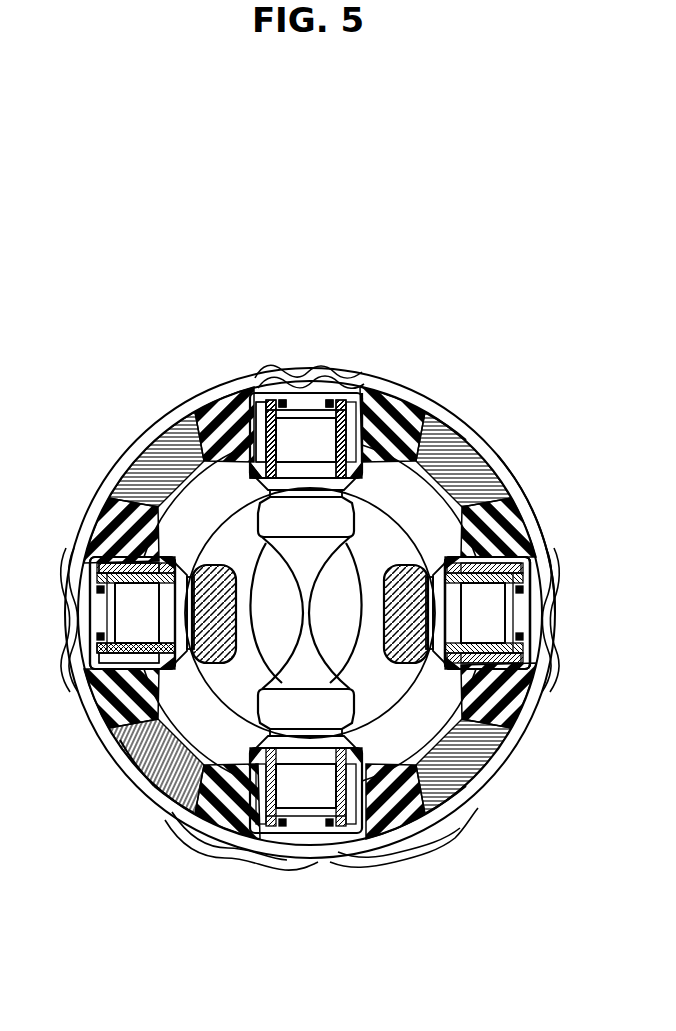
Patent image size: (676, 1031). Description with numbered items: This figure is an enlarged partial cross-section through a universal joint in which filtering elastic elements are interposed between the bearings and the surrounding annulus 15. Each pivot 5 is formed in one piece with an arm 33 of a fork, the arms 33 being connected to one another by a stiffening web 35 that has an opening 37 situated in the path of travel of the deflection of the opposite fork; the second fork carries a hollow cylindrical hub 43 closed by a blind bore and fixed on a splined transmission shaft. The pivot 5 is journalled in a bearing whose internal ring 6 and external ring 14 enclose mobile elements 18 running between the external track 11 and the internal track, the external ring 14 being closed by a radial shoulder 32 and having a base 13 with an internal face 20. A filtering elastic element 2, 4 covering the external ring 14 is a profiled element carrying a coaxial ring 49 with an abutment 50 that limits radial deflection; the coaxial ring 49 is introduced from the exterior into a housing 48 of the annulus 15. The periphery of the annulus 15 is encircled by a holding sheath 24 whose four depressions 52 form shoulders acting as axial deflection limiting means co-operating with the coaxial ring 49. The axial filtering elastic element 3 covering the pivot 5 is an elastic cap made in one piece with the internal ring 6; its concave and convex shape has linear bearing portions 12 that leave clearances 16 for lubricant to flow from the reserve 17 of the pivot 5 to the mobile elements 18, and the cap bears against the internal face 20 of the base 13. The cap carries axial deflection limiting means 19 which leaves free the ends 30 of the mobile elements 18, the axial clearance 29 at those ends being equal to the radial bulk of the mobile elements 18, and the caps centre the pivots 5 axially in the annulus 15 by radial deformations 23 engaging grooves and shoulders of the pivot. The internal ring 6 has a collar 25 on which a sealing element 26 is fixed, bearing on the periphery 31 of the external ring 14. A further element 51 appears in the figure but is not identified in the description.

The filtering elastic element 2 is at (522, 530).
The axial filtering elastic element 3 is at (80, 605).
The filtering elastic element 4 is at (548, 625).
The pivot 5 is at (70, 625).
The internal ring 6 is at (517, 528).
The external track 11 is at (548, 538).
The linear bearing portions 12 is at (266, 388).
The base 13 is at (342, 384).
The external ring 14 is at (368, 438).
The annulus 15 is at (120, 460).
The clearances 16 is at (305, 388).
The reserve 17 is at (540, 612).
The mobile elements 18 is at (252, 420).
The axial deflection limiting means 19 is at (92, 650).
The internal face 20 is at (247, 392).
The radial deformations 23 is at (517, 594).
The holding sheath 24 is at (135, 795).
The collar 25 is at (420, 413).
The sealing element 26 is at (247, 476).
The axial clearance 29 is at (90, 560).
The ends 30 is at (359, 372).
The periphery 31 is at (245, 412).
The radial shoulder 32 is at (402, 432).
The arm 33 is at (200, 666).
The stiffening web 35 is at (305, 637).
The opening 37 is at (286, 569).
The hollow cylindrical hub 43 is at (390, 557).
The housing 48 is at (178, 426).
The coaxial ring 49 is at (158, 424).
The abutment 50 is at (212, 398).
The boot flange 51 is at (125, 770).
The depressions 52 is at (260, 388).